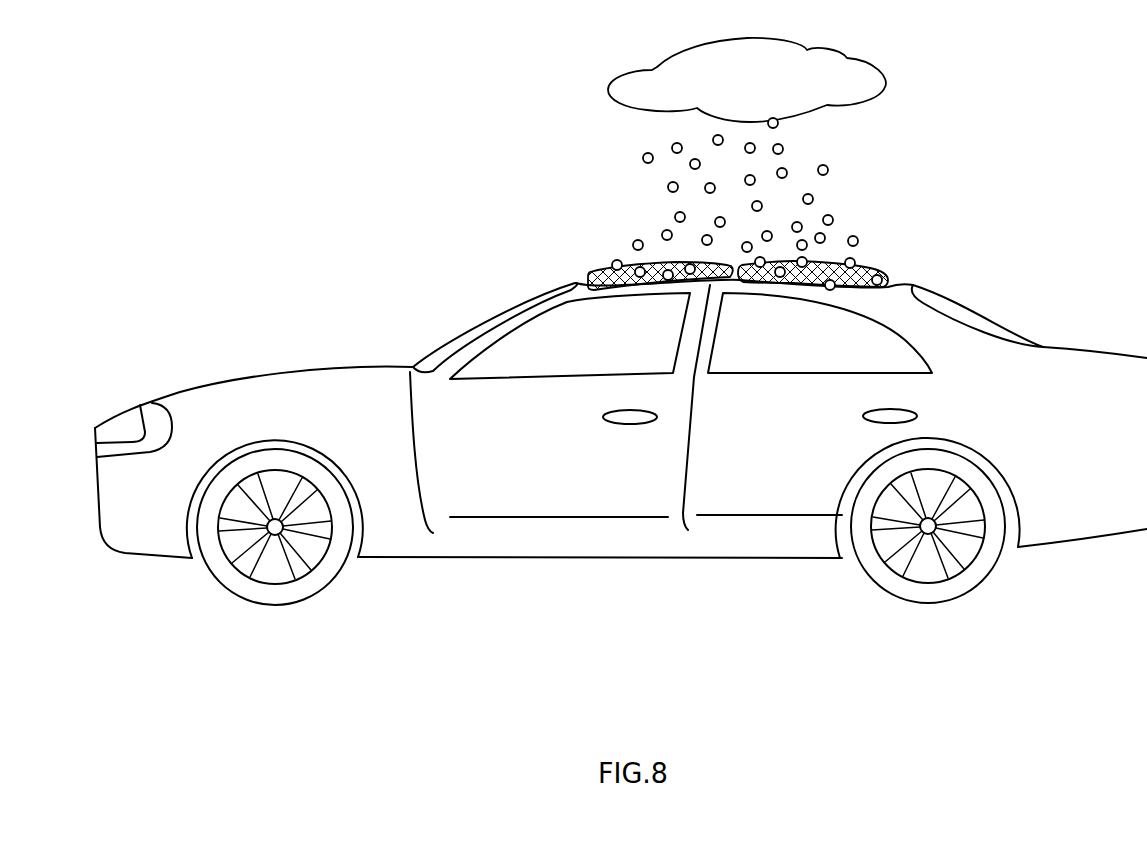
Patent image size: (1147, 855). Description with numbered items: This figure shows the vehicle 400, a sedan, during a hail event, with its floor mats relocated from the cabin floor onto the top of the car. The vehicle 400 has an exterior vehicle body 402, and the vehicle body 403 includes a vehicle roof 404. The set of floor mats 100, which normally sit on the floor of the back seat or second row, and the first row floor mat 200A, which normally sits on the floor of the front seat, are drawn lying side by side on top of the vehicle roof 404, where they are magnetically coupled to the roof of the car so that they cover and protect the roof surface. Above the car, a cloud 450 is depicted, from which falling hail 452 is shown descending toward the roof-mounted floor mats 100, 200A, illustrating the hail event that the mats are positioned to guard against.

The vehicle 400 is at (287, 280).
The exterior vehicle body 402 is at (580, 281).
The vehicle body 403 is at (1043, 348).
The vehicle roof 404 is at (898, 278).
The set of floor mats 100 is at (863, 268).
The floor mat 200A is at (595, 272).
The cloud 450 is at (867, 82).
The rain droplets 452 is at (828, 168).